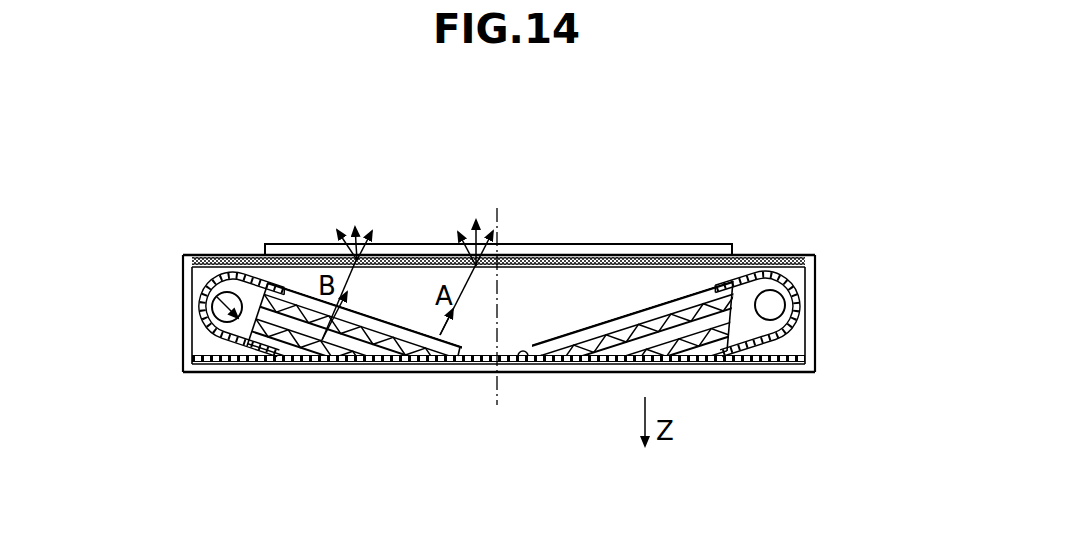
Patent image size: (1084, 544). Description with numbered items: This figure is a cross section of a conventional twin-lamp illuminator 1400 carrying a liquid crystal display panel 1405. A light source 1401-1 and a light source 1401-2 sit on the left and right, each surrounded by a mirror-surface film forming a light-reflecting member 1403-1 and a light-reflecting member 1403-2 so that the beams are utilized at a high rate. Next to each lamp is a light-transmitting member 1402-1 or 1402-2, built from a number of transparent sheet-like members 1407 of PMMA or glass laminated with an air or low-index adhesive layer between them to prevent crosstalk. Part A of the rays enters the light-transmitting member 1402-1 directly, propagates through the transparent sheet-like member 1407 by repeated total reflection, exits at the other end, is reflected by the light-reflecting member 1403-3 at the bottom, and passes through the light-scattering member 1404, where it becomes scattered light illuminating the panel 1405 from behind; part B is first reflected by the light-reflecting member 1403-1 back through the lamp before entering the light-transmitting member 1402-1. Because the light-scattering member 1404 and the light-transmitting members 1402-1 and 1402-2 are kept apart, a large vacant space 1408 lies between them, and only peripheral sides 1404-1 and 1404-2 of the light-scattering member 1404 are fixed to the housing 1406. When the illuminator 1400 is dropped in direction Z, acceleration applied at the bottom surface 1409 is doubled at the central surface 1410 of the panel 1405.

The illuminator 1400 is at (554, 310).
The light source 1401-1 is at (212, 306).
The light source 1401-2 is at (786, 314).
The light-transmitting member 1402-1 is at (376, 322).
The light-transmitting member 1402-2 is at (687, 289).
The light-reflecting member 1403-1 is at (213, 338).
The light-reflecting member 1403-2 is at (795, 338).
The light-reflecting member 1403-3 is at (532, 363).
The light-scattering member 1404 is at (808, 255).
The peripheral side 1404-1 is at (178, 256).
The peripheral side 1404-2 is at (816, 262).
The liquid crystal display panel 1405 is at (716, 244).
The housing 1406 is at (804, 373).
The transparent sheet-like member 1407 is at (445, 348).
The vacant space 1408 is at (533, 282).
The bottom surface 1409 is at (497, 385).
The central surface 1410 is at (502, 244).